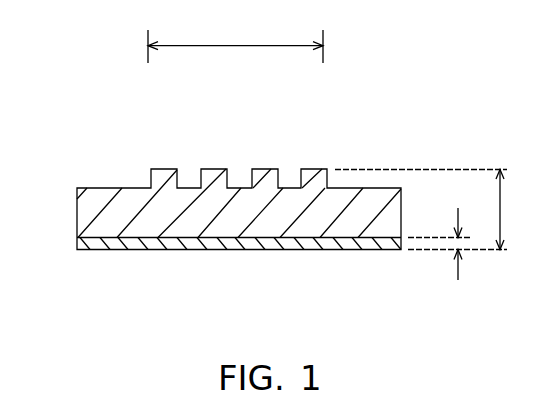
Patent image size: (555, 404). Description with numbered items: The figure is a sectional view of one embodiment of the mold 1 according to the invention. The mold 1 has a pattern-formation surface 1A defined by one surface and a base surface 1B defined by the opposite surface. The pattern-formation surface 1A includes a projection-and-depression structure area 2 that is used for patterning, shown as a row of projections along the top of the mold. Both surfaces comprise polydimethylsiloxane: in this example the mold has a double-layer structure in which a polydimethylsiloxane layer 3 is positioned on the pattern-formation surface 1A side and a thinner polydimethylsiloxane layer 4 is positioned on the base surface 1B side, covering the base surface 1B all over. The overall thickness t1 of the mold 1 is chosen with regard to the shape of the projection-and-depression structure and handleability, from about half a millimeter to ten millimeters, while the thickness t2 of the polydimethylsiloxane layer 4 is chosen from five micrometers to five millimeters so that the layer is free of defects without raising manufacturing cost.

The mold 1 is at (209, 179).
The pattern-formation surface 1A is at (362, 157).
The base surface 1B is at (350, 255).
The projection-and-depression structure area 2 is at (235, 40).
The polydimethylsiloxane layer 3 is at (87, 208).
The polydimethylsiloxane layer 4 is at (113, 239).
The thickness of the mold t1 is at (514, 210).
The thickness of the polydimethylsiloxane layer t2 is at (440, 231).